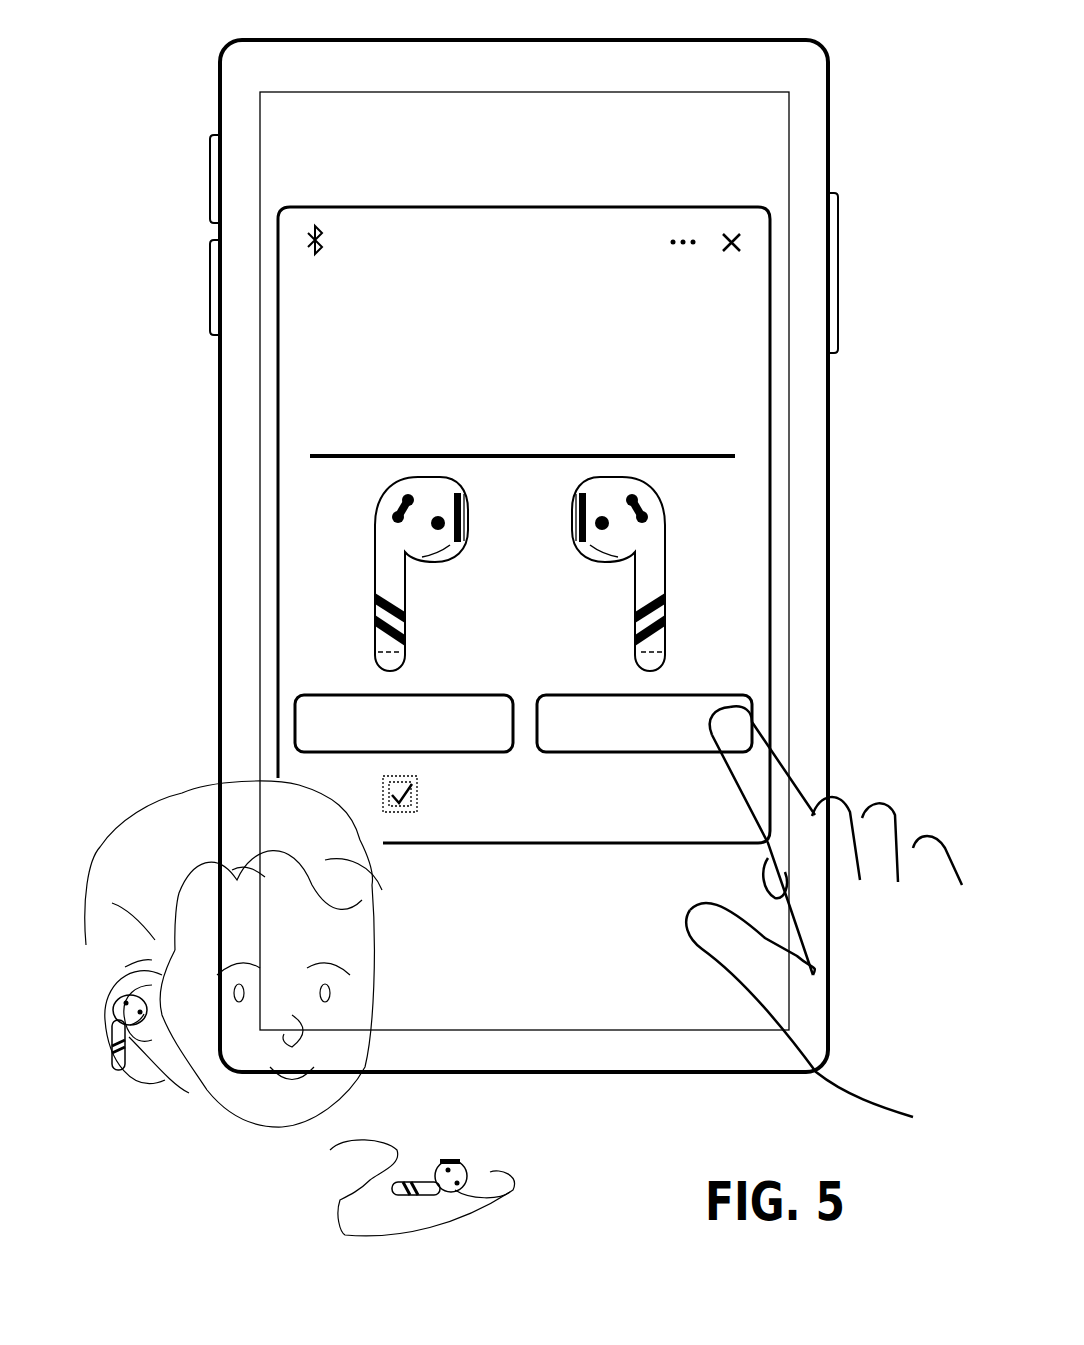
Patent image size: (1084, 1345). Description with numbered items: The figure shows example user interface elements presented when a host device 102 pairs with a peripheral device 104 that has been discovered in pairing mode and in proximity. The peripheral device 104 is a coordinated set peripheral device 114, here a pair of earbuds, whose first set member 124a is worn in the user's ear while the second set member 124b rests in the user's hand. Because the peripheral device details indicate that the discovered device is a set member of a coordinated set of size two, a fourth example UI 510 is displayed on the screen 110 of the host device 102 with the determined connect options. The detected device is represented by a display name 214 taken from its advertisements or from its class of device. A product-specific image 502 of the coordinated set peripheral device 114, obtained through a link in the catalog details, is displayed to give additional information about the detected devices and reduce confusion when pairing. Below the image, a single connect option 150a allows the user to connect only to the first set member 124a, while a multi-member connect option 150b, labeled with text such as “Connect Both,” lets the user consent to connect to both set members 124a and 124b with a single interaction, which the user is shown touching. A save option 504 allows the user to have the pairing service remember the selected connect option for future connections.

The host device 102 is at (901, 46).
The screen 110 is at (265, 108).
The display name 214 is at (352, 268).
The fourth example UI 510 is at (760, 250).
The first set member 124a is at (365, 527).
The second set member 124b is at (675, 525).
The product-specific image 502 is at (645, 590).
The single connect option 150a is at (315, 718).
The multi-member connect option 150b is at (735, 705).
The save option 504 is at (410, 810).
The peripheral device 104 is at (118, 1072).
The coordinated set peripheral device 114 is at (290, 1095).